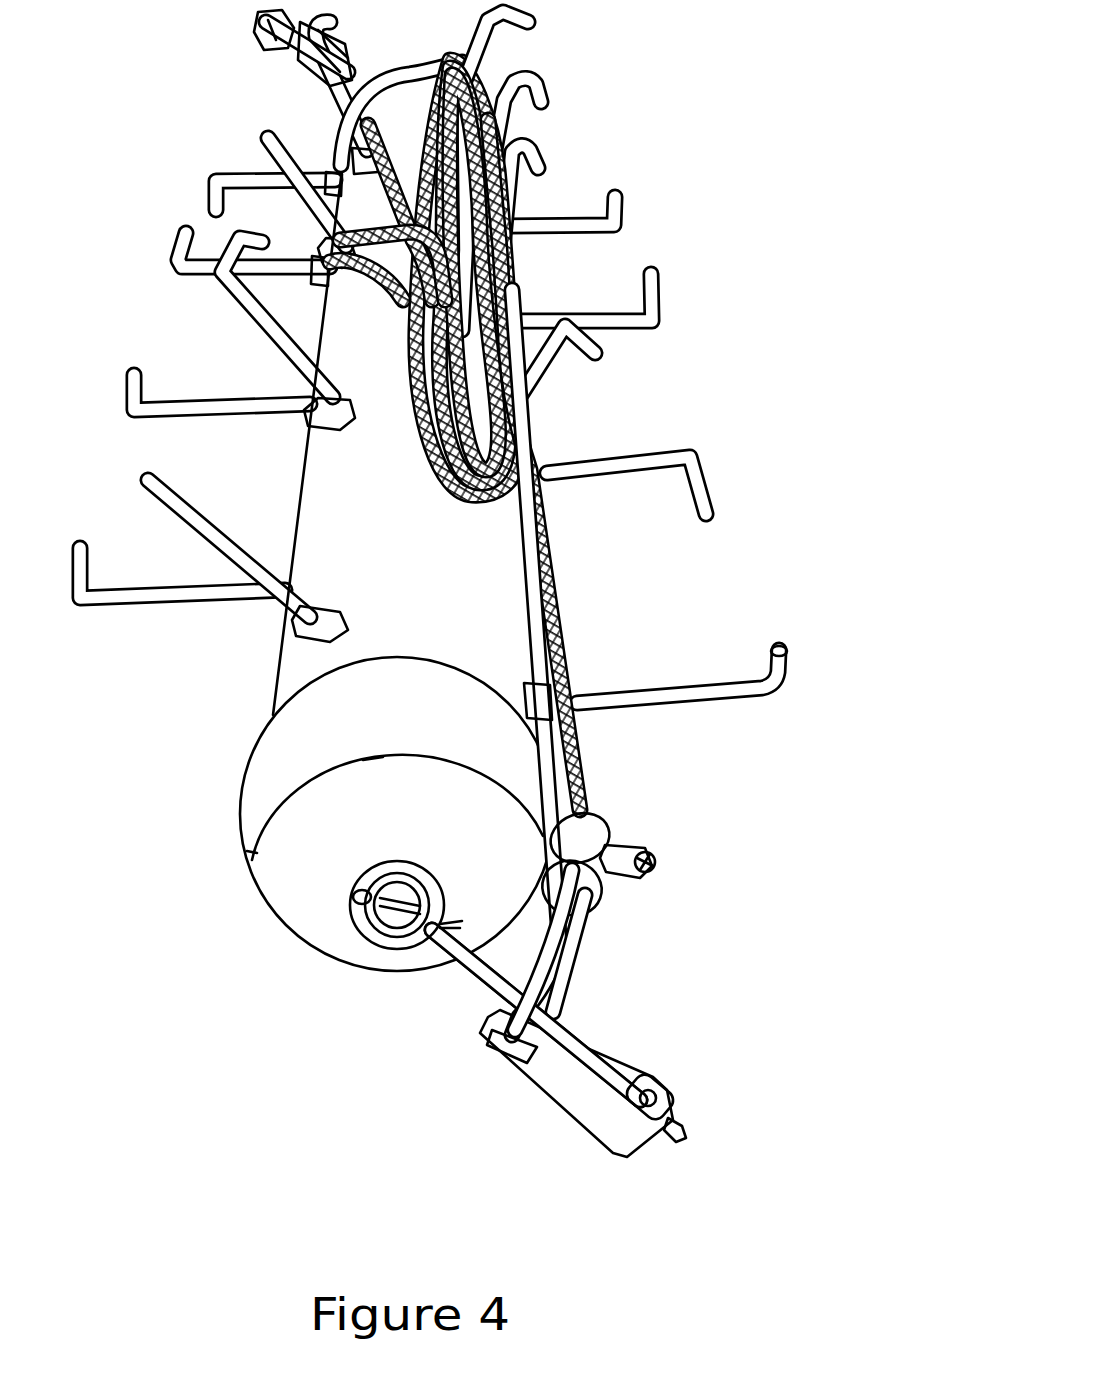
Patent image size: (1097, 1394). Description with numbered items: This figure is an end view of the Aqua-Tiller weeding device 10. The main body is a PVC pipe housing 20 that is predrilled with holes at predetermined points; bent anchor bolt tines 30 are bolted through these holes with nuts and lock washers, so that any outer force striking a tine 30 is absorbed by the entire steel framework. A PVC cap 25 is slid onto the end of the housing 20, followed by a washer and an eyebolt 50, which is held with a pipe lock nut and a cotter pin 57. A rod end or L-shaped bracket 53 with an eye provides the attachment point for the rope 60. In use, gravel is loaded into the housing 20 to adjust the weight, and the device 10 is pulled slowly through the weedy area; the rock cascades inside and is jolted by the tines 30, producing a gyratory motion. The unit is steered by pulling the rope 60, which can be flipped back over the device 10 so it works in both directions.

The device 10 is at (621, 112).
The PVC housing 20 is at (303, 667).
The cap 25 is at (297, 752).
The tines 30 is at (623, 211).
The eyebolt 50 is at (468, 968).
The rod end or L bracket 53 is at (573, 1082).
The cotter pin 57 is at (353, 905).
The rope 60 is at (567, 620).